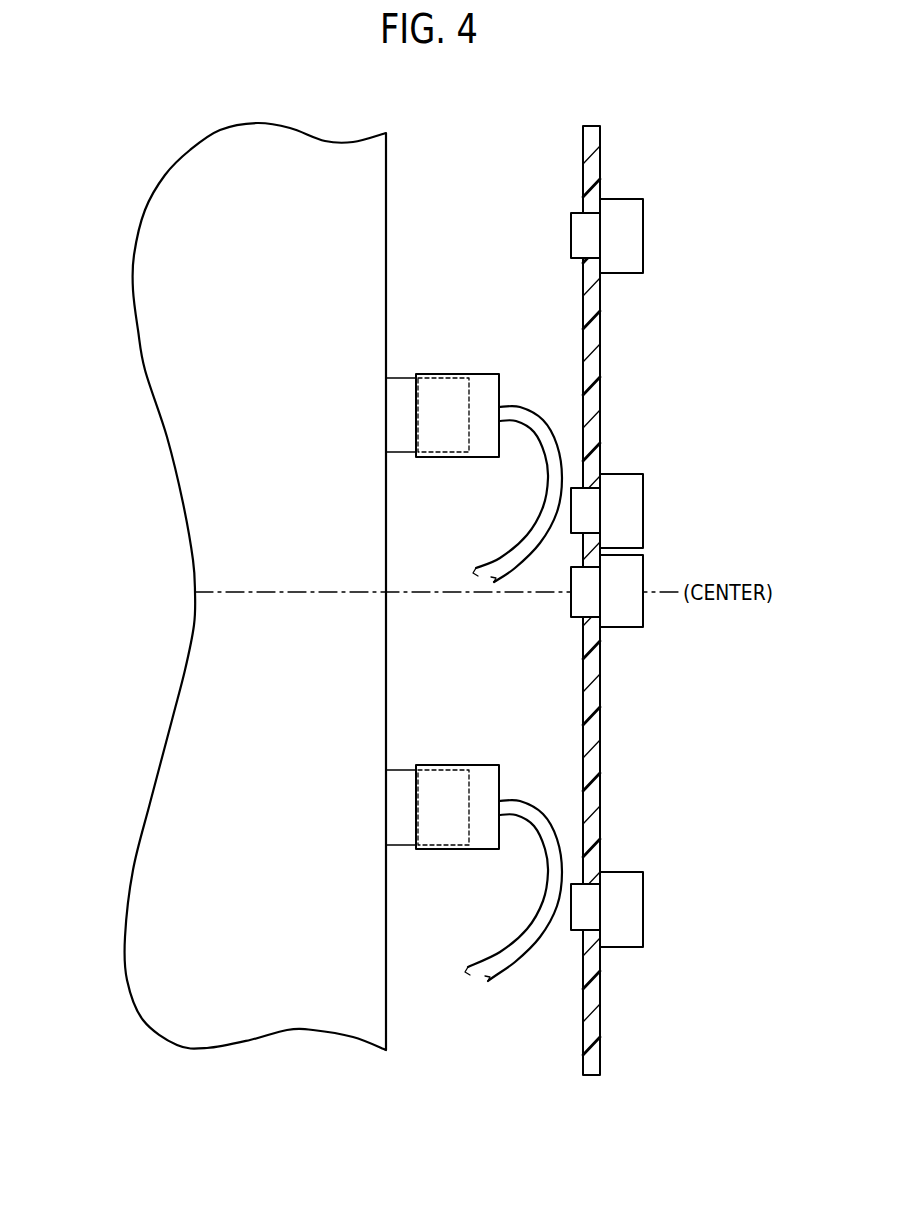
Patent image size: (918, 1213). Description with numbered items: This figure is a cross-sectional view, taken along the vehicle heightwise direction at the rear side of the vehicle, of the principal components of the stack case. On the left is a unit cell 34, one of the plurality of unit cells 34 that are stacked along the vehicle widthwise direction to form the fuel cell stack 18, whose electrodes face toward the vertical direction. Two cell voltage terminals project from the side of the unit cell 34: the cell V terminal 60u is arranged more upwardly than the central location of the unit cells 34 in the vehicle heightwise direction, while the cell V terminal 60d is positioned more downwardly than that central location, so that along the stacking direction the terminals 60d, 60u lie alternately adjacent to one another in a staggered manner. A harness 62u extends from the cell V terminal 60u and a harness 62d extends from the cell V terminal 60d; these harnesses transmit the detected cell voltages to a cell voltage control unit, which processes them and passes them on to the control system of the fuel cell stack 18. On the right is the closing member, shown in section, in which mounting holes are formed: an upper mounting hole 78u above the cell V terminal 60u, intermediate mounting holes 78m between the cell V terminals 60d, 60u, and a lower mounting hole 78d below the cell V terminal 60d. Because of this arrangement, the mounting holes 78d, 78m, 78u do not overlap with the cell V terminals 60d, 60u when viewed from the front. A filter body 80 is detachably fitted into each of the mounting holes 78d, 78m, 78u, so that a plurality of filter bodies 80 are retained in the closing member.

The unit cell 34 is at (255, 567).
The fuel cell stack 18 is at (304, 152).
The cell V terminal 60u is at (465, 373).
The cell V terminal 60d is at (482, 765).
The harness 62u is at (518, 532).
The harness 62d is at (513, 928).
The upper mounting hole 78u is at (594, 212).
The intermediate mounting hole 78m is at (590, 532).
The lower mounting hole 78d is at (590, 931).
The filter body 80 is at (662, 214).